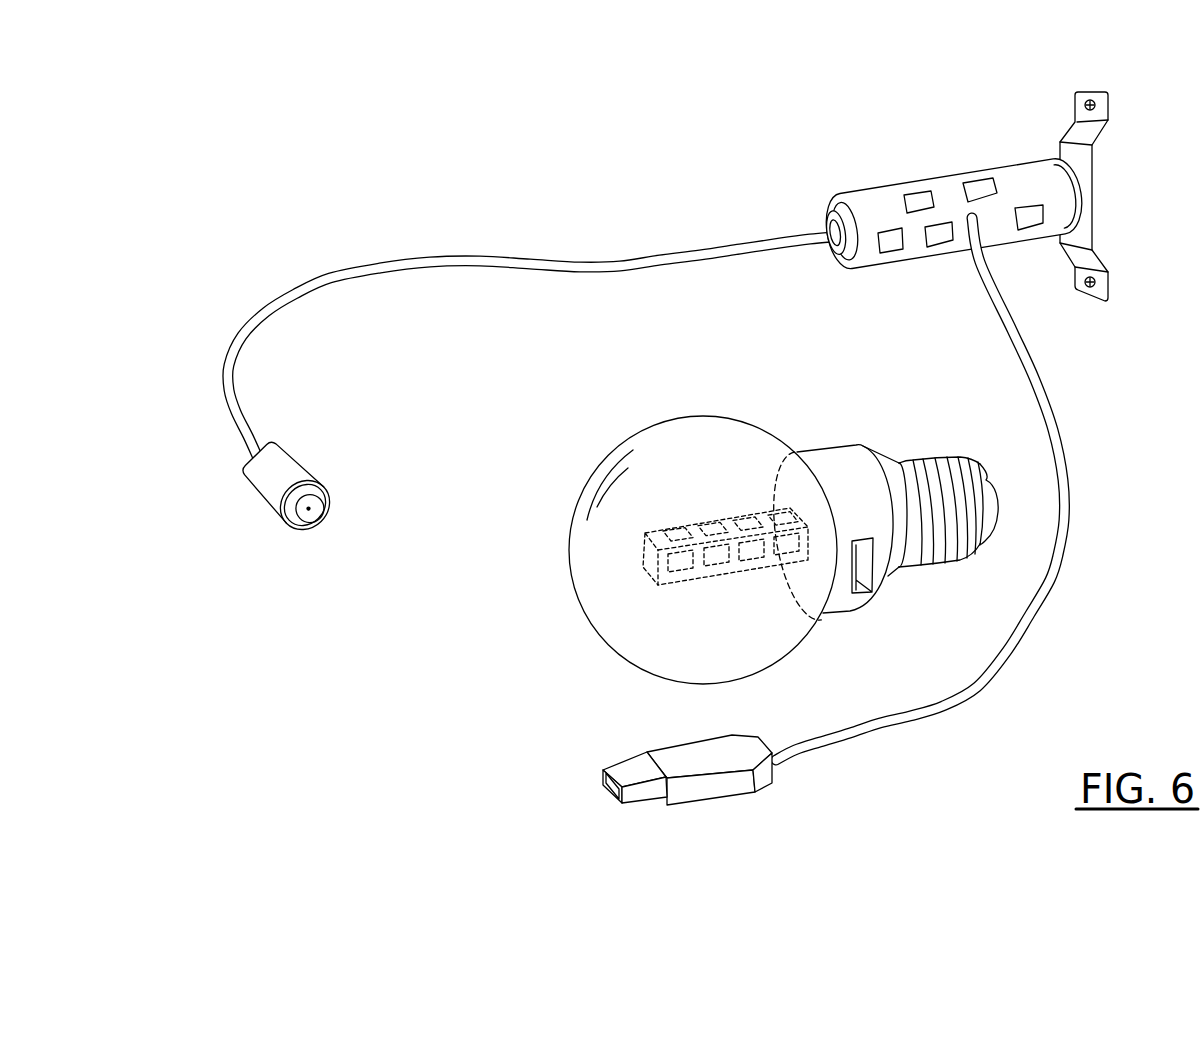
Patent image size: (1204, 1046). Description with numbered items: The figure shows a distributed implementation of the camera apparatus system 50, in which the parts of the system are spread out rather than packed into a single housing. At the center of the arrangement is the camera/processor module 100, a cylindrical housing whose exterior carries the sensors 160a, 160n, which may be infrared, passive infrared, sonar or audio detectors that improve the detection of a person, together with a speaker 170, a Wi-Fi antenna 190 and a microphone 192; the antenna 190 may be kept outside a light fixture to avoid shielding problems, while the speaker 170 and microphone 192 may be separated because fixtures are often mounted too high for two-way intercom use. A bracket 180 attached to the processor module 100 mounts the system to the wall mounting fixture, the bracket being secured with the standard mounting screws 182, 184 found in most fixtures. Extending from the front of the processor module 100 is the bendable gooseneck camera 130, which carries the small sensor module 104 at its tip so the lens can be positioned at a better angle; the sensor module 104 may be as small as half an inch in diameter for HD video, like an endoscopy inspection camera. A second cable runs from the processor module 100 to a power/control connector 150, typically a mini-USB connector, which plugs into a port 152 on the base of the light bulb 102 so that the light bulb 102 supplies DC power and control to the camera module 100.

The system 50 is at (332, 84).
The camera/processor module 100 is at (942, 215).
The light bulb 102 is at (782, 549).
The sensor module 104 is at (300, 452).
The gooseneck camera 130 is at (342, 271).
The power/control connector 150 is at (668, 751).
The connector port 152 is at (862, 600).
The sensor 160a is at (885, 257).
The sensor 160n is at (943, 247).
The speaker 170 is at (1025, 232).
The bracket 180 is at (1093, 182).
The mounting screw 182 is at (1100, 106).
The mounting screw 184 is at (1100, 283).
The Wi-Fi antenna 190 is at (982, 178).
The microphone 192 is at (912, 193).